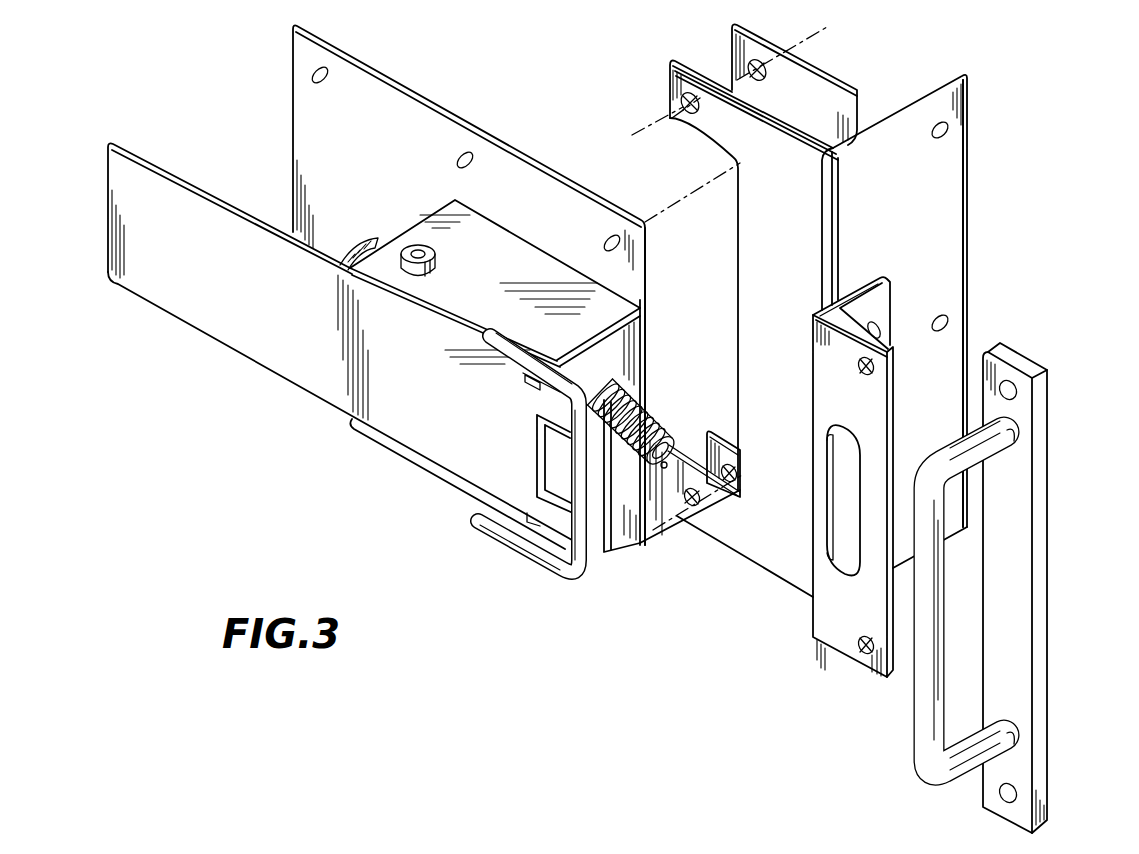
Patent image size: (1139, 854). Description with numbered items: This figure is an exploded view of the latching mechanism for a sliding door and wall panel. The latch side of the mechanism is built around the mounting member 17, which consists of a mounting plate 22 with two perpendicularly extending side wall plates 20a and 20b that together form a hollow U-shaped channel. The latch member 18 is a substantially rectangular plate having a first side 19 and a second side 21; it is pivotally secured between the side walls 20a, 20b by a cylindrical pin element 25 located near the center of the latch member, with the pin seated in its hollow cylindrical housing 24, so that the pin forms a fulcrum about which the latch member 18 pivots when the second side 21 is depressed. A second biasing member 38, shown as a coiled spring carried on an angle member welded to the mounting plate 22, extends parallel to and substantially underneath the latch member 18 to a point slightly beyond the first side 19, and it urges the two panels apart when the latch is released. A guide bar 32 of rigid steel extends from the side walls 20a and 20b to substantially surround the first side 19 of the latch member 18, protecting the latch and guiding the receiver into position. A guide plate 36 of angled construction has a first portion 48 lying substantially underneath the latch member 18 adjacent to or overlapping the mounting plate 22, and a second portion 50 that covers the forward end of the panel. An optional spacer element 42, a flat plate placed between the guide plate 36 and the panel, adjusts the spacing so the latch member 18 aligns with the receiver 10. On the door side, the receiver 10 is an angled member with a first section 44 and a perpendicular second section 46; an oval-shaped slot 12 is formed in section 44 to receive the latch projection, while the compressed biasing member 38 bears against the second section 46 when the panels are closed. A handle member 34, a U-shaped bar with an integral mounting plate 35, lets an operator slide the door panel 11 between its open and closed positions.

The receiver 10 is at (840, 658).
The door panel 11 is at (818, 618).
The slot 12 is at (840, 495).
The mounting member 17 is at (545, 277).
The latch member 18 is at (333, 344).
The first side 19 is at (510, 461).
The side wall plate 20a is at (530, 282).
The side wall plate 20b is at (575, 460).
The second side 21 is at (115, 225).
The mounting plate 22 is at (396, 180).
The knurled boss 24 is at (345, 258).
The pin element 25 is at (418, 254).
The guide bar 32 is at (575, 575).
The handle member 34 is at (990, 450).
The mounting plate 35 is at (1045, 538).
The guide plate 36 is at (924, 217).
The second biasing member 38 is at (650, 420).
The spacer element 42 is at (722, 432).
The first section 44 is at (880, 410).
The second section 46 is at (880, 306).
The first portion 48 is at (777, 566).
The second portion 50 is at (967, 182).